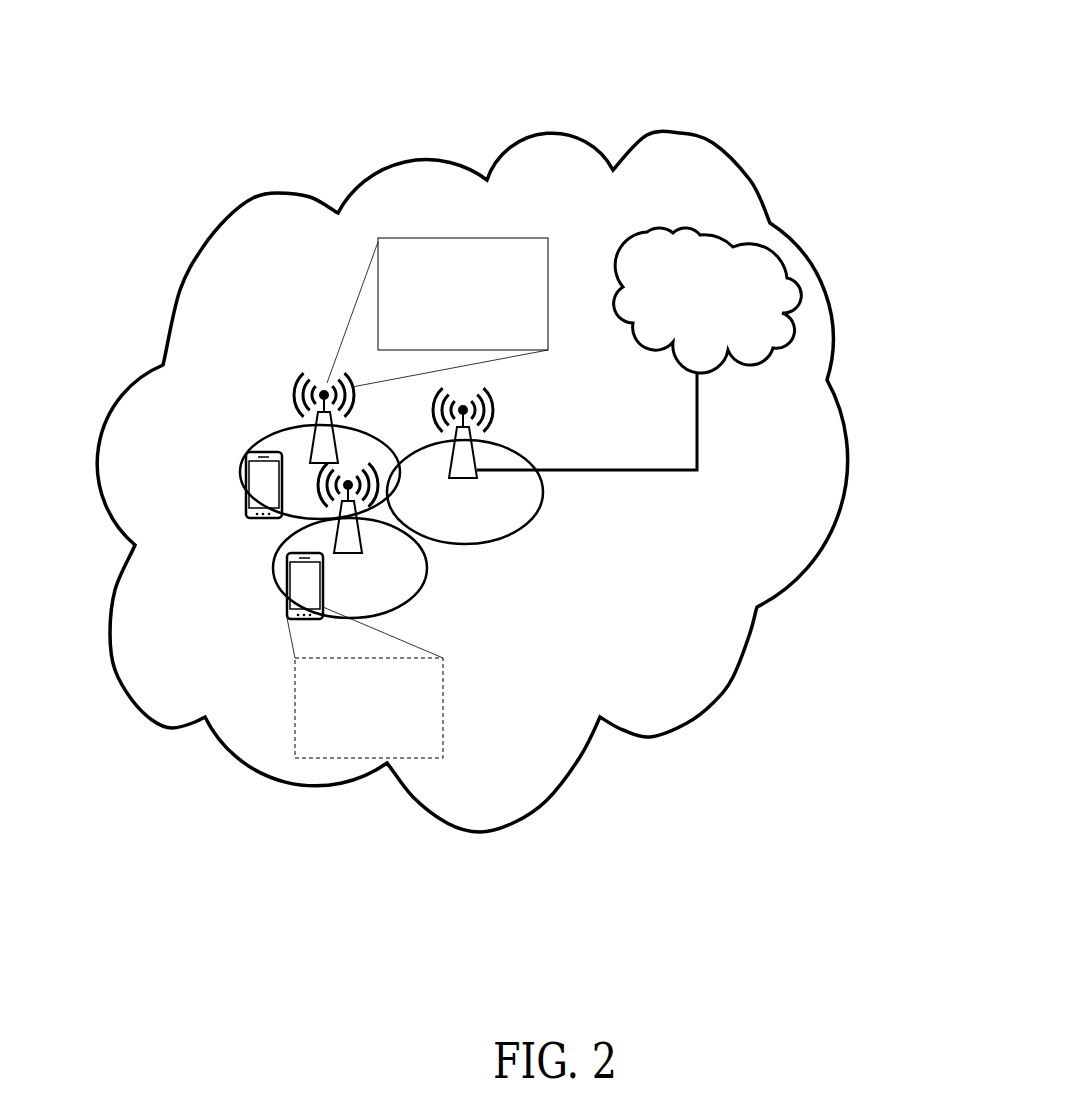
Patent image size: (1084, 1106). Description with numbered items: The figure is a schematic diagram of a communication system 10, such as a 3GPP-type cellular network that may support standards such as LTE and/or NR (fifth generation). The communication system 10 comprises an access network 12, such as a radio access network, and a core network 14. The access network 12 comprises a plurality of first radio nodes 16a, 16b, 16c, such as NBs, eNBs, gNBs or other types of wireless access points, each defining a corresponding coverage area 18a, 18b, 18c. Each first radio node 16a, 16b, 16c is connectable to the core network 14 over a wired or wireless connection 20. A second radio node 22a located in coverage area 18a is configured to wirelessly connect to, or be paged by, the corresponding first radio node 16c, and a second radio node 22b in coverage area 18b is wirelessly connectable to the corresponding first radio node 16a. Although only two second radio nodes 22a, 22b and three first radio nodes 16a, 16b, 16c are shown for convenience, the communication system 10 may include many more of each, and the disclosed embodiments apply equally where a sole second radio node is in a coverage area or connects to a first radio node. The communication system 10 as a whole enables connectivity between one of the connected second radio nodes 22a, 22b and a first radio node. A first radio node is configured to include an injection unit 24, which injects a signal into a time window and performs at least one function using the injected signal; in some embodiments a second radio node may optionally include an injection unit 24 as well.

The communication system 10 is at (371, 65).
The access network 12 is at (553, 170).
The core network 14 is at (762, 304).
The first radio node 16a is at (362, 552).
The first radio node 16b is at (480, 412).
The first radio node 16c is at (312, 428).
The coverage area 18a is at (263, 443).
The coverage area 18b is at (427, 567).
The coverage area 18c is at (543, 493).
The wired or wireless connection 20 is at (698, 423).
The second radio node 22a is at (250, 517).
The second radio node 22b is at (287, 612).
The injection unit 24 is at (451, 324).